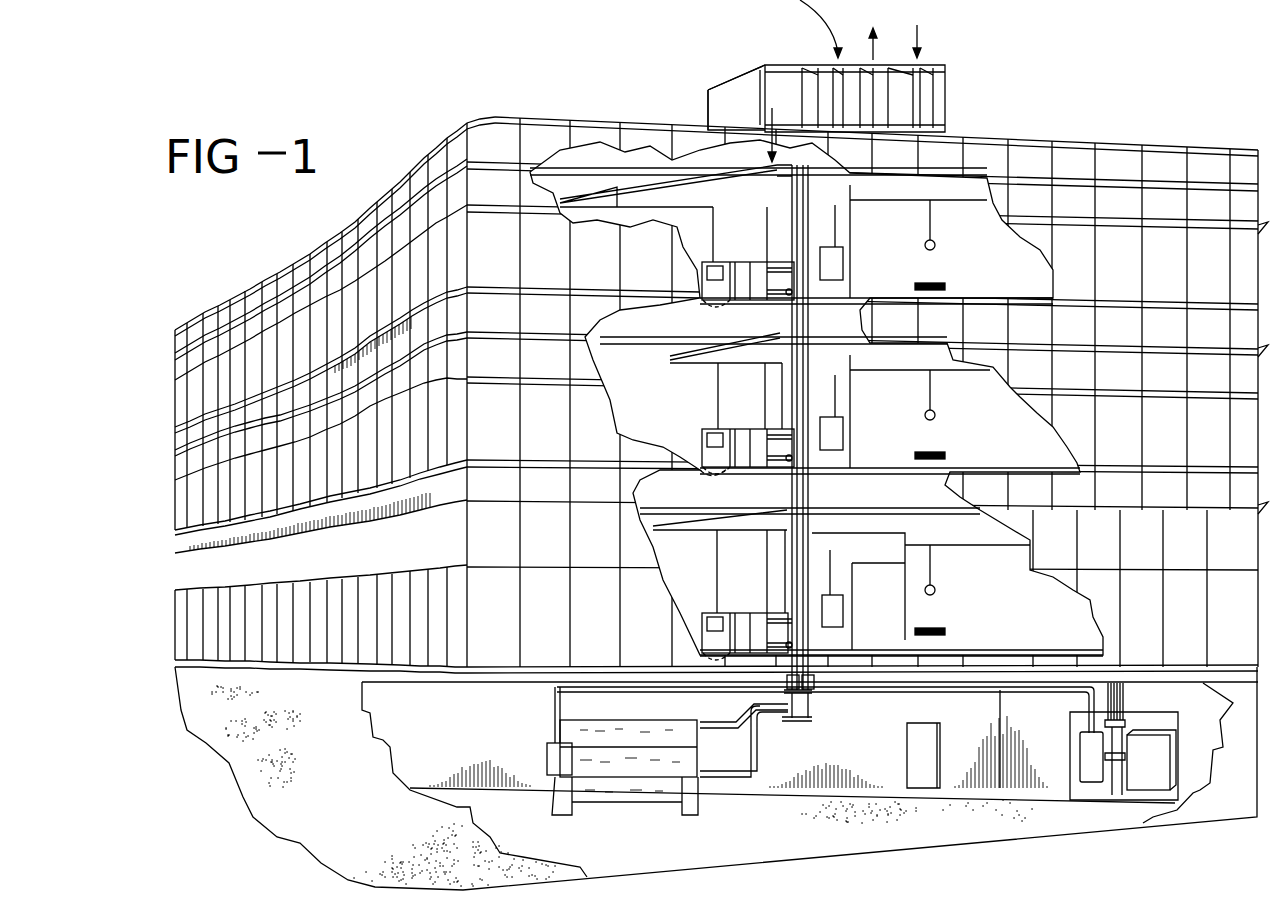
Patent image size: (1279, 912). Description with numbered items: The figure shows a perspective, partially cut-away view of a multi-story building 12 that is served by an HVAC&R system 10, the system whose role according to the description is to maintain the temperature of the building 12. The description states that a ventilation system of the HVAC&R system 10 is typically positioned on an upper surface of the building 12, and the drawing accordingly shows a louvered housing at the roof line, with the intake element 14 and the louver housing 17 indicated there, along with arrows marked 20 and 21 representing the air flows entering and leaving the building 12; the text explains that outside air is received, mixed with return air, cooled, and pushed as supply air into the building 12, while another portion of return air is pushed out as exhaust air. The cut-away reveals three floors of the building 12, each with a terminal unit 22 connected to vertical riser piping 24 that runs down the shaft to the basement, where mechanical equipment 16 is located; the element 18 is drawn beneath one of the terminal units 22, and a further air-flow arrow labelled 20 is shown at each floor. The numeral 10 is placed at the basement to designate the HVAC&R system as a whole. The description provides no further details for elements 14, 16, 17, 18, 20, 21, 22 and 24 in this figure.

The HVAC&R system 10 is at (654, 820).
The building 12 is at (1117, 147).
The air intake 14 is at (708, 111).
The mechanical plant / chiller 16 is at (558, 733).
The louver housing 17 is at (755, 112).
The terminal unit 18 is at (708, 474).
The supply air flow / duct 20 is at (917, 42).
The exhaust air flow 21 is at (873, 40).
The fan coil unit 22 is at (749, 431).
The riser piping 24 is at (801, 650).